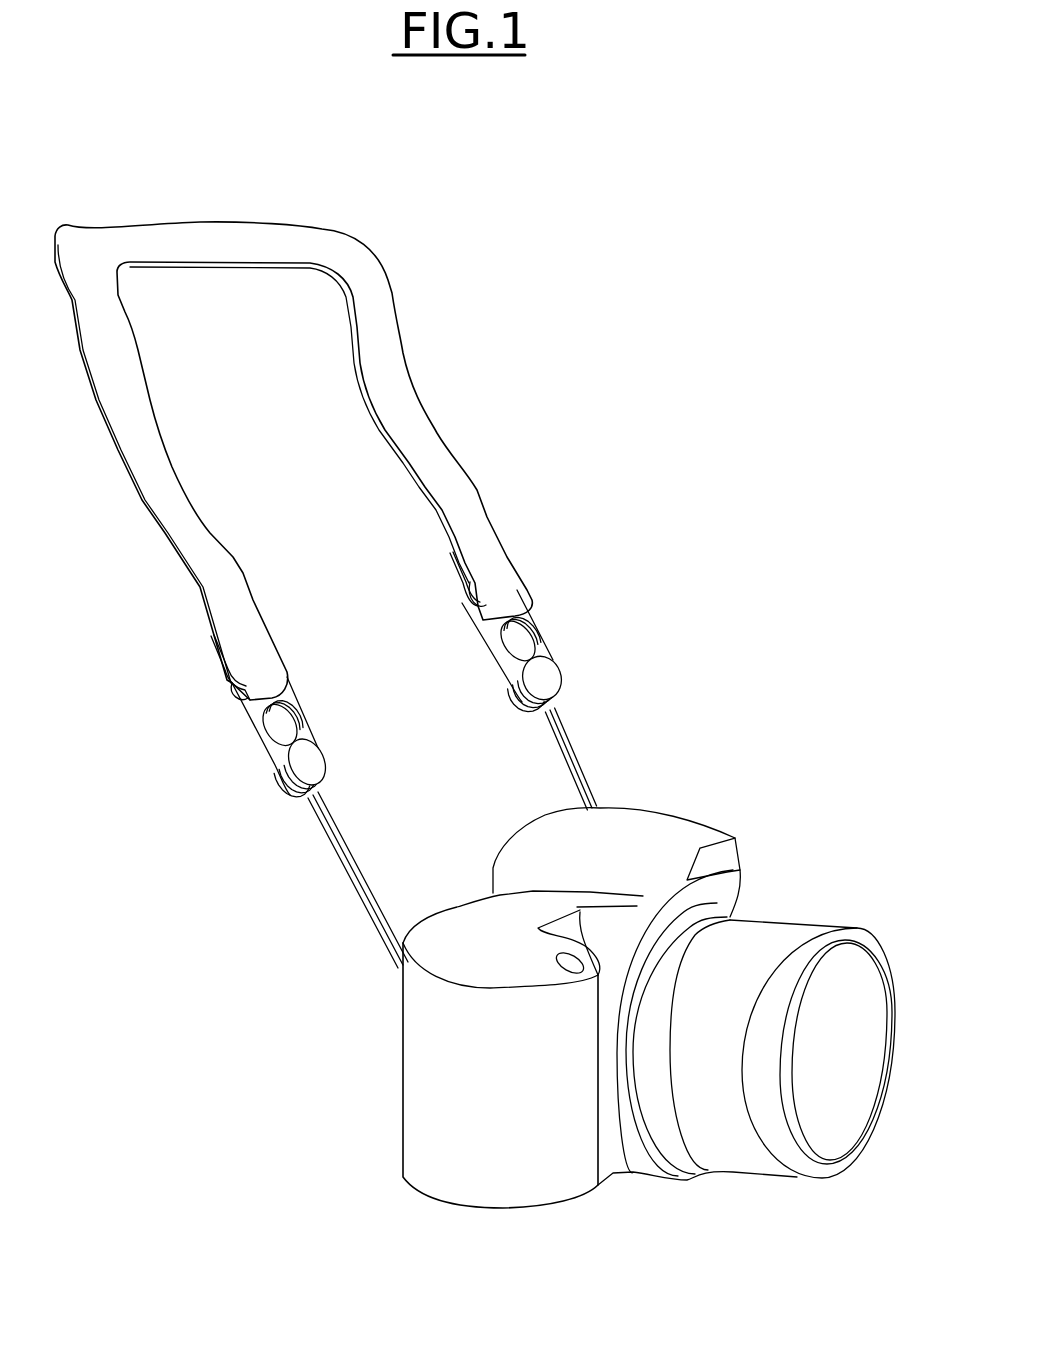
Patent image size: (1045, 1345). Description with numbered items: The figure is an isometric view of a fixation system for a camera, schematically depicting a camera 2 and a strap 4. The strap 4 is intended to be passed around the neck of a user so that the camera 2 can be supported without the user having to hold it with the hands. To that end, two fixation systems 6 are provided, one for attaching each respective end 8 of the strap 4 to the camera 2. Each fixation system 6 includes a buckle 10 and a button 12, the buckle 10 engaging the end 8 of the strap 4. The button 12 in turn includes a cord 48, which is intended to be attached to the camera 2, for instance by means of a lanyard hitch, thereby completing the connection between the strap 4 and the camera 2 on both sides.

The camera 2 is at (395, 1062).
The strap 4 is at (402, 353).
The fixation system 6 is at (398, 707).
The end 8 is at (262, 685).
The buckle 10 is at (257, 715).
The button 12 is at (277, 777).
The cord 48 is at (370, 920).